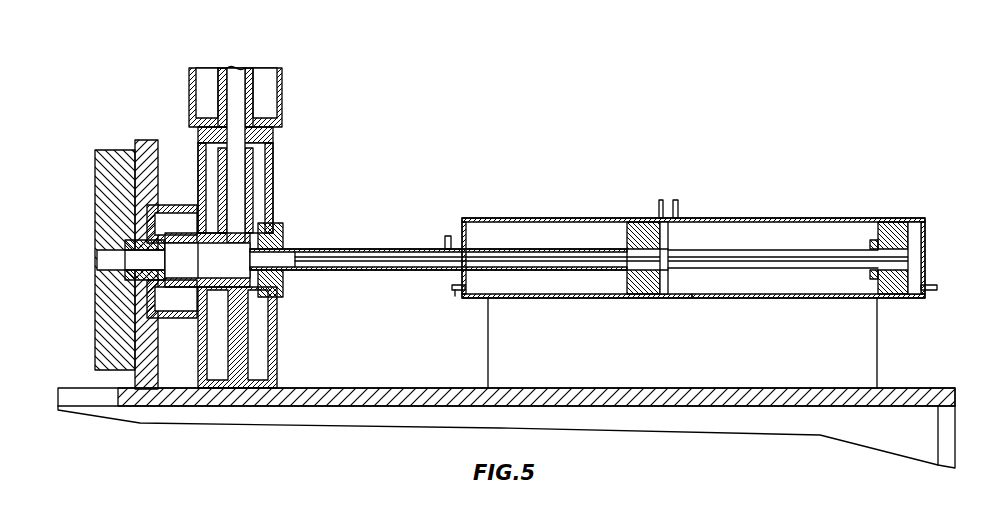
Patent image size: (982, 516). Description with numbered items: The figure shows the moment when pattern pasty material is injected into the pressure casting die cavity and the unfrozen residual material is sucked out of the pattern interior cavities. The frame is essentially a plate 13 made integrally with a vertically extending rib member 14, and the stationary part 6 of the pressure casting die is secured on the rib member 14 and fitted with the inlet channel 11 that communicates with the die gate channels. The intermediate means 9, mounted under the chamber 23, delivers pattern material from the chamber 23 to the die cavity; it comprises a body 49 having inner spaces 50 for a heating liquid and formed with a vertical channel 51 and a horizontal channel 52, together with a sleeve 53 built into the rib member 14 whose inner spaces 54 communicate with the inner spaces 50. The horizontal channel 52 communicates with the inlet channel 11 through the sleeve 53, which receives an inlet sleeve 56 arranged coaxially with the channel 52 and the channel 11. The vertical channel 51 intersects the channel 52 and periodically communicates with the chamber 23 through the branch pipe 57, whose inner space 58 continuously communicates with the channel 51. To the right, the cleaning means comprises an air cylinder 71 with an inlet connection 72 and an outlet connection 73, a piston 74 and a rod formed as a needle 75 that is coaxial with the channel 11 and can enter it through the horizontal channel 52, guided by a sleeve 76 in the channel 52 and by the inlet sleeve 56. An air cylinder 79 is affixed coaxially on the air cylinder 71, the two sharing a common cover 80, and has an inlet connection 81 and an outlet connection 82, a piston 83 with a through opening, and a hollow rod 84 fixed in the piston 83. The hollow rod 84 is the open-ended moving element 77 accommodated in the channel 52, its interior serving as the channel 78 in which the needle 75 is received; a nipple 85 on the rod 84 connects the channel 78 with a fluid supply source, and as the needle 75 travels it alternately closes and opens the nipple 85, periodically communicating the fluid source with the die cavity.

The part of the pressure casting die 6 is at (97, 322).
The intermediate means 9 is at (237, 205).
The inlet channel 11 is at (100, 261).
The plate 13 is at (423, 406).
The rib member 14 is at (148, 141).
The chamber 23 is at (284, 84).
The body 49 is at (278, 326).
The inner spaces 50 is at (273, 156).
The channel 51 is at (232, 162).
The channel 52 is at (283, 298).
The sleeve 53 is at (186, 318).
The inner spaces 54 is at (172, 216).
The inlet sleeve 56 is at (122, 240).
The branch pipe 57 is at (248, 68).
The inner space 58 is at (236, 70).
The air cylinder 71 is at (758, 298).
The inlet connection 72 is at (935, 285).
The outlet connection 73 is at (680, 204).
The piston 74 is at (900, 222).
The needle 75 is at (752, 250).
The sleeve 76 is at (282, 240).
The moving element 77 is at (308, 248).
The channel 78 is at (300, 270).
The air cylinder 79 is at (537, 218).
The common cover 80 is at (664, 294).
The inlet connection 81 is at (661, 200).
The outlet connection 82 is at (455, 292).
The piston 83 is at (640, 222).
The hollow rod 84 is at (542, 298).
The nipple 85 is at (447, 238).